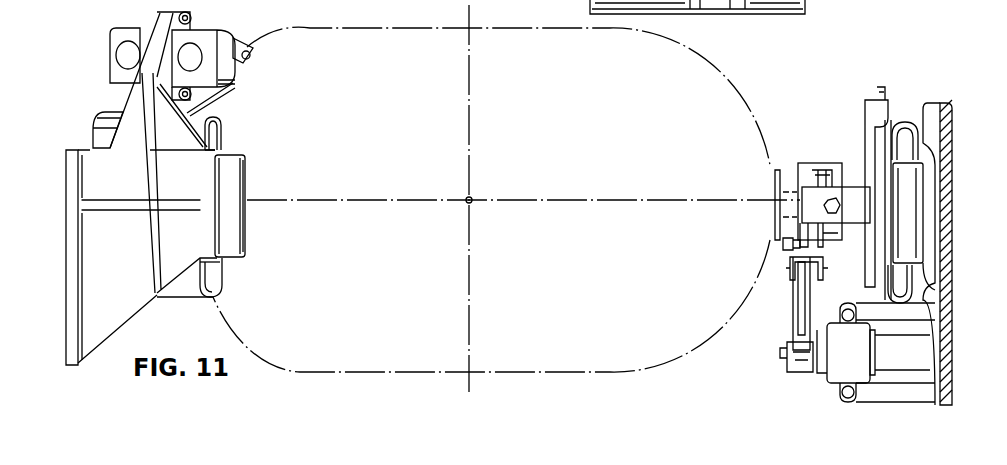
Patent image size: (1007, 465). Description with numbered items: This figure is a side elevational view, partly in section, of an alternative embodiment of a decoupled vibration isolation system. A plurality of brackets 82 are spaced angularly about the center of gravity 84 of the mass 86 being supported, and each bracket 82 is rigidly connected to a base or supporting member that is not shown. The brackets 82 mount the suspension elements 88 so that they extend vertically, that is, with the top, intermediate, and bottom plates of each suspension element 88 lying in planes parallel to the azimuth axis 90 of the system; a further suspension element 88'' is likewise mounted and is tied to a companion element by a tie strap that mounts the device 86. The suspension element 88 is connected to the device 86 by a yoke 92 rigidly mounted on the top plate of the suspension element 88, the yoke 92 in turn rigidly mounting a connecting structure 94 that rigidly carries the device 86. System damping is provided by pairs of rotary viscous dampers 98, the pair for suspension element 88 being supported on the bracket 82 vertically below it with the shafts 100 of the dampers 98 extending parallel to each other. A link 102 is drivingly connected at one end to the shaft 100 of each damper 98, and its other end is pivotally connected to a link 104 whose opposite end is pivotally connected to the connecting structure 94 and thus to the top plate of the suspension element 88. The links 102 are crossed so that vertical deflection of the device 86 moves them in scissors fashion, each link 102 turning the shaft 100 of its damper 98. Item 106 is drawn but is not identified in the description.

The bracket 82 is at (121, 251).
The center of gravity 84 is at (471, 199).
The mass 86 is at (413, 28).
The suspension element 88 is at (918, 180).
The suspension element 88'' is at (186, 294).
The azimuth axis 90 is at (470, 113).
The yoke 92 is at (860, 172).
The connecting structure 94 is at (803, 160).
The rotary viscous damper 98 is at (134, 10).
The shaft 100 is at (787, 347).
The link 102 is at (800, 310).
The link 104 is at (785, 257).
The roller bracket arm 106 is at (213, 97).